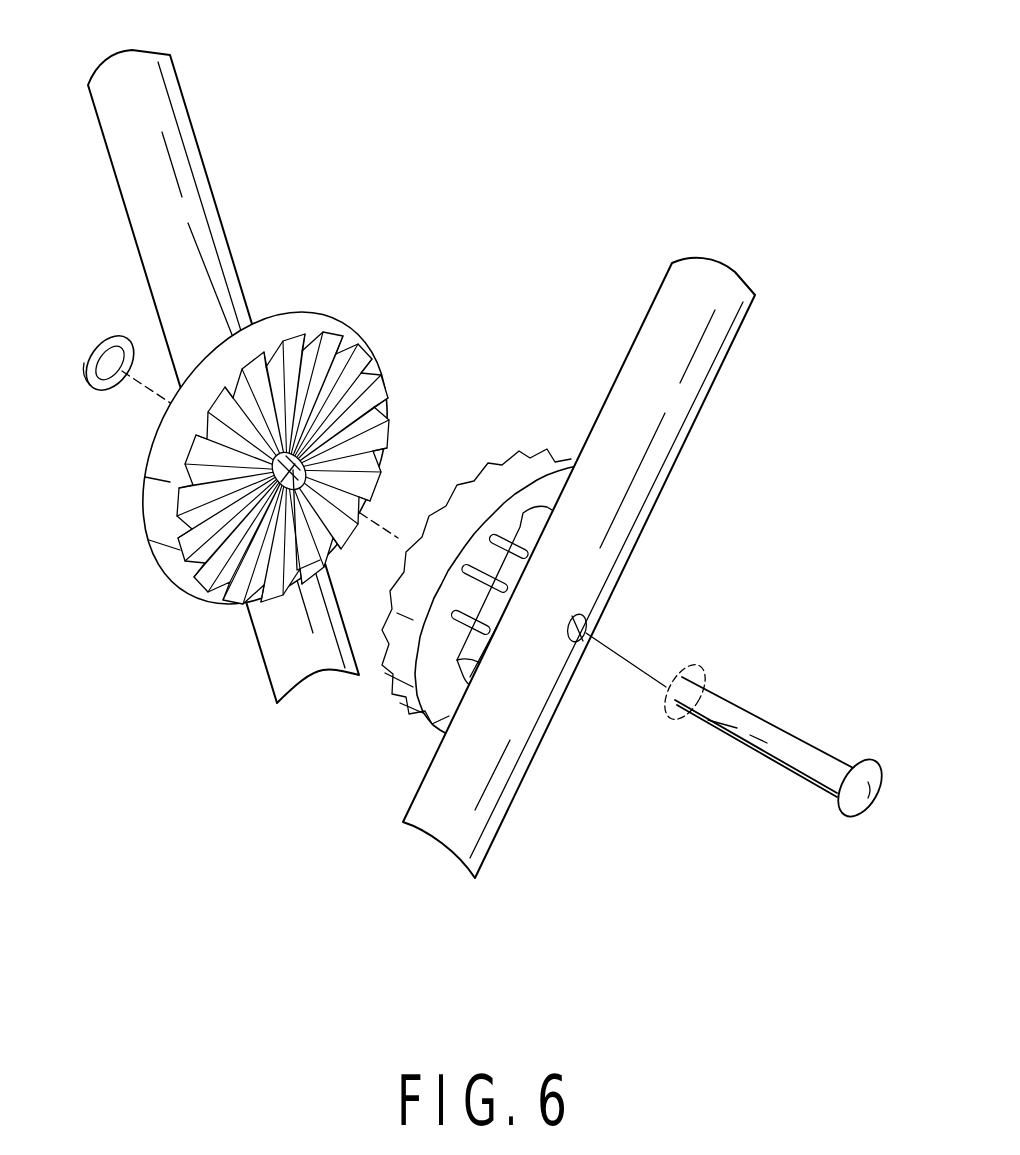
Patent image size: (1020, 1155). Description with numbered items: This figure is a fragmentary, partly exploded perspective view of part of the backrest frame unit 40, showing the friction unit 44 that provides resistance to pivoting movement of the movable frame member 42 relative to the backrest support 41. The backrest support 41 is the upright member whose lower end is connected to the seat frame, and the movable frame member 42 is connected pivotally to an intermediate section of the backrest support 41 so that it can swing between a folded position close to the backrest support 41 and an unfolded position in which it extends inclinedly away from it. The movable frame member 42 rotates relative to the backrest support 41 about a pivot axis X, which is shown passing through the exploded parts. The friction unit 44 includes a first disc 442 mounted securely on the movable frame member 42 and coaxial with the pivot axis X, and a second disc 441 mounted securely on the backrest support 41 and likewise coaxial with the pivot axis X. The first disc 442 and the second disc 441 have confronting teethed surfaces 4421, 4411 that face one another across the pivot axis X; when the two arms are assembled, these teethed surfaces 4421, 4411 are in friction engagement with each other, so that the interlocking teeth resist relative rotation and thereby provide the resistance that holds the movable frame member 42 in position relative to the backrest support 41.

The backrest frame unit 40 is at (707, 397).
The backrest support 41 is at (650, 480).
The movable frame member 42 is at (183, 137).
The friction unit 44 is at (457, 327).
The second disc 441 is at (557, 457).
The teethed surface 4411 is at (500, 457).
The first disc 442 is at (279, 318).
The teethed surface 4421 is at (303, 353).
The pivot axis X is at (138, 388).